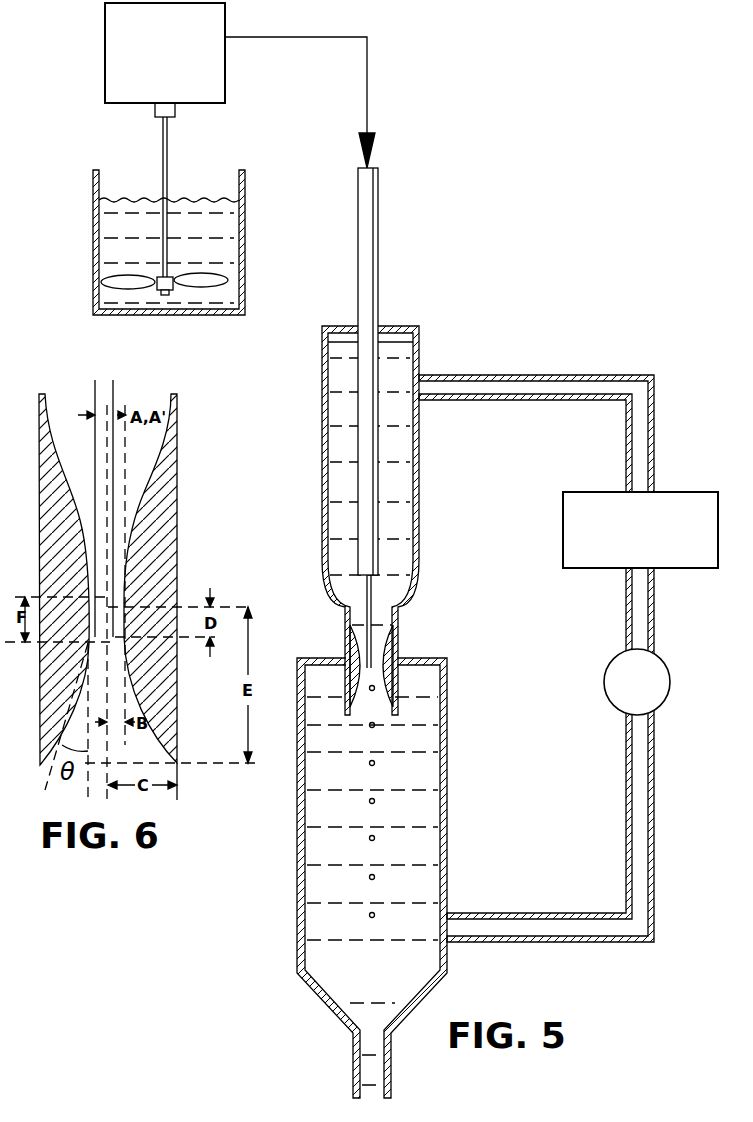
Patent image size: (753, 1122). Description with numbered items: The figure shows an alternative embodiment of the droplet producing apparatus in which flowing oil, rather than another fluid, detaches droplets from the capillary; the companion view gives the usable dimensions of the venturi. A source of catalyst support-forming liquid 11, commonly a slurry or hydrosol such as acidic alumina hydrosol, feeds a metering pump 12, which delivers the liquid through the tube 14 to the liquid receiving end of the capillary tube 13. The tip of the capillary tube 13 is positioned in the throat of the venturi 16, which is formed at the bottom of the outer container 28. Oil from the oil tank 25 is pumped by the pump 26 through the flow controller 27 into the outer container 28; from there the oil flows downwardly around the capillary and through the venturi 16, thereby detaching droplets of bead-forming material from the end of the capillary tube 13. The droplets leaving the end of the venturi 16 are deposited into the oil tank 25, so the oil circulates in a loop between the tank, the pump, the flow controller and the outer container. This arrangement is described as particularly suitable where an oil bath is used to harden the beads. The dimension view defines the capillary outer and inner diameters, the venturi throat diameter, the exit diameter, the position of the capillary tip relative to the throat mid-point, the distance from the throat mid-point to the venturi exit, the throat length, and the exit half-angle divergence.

The source of catalyst support-forming liquid 11 is at (245, 238).
The metering pump 12 is at (225, 20).
The capillary tube 13 is at (398, 618).
The tube 14 is at (378, 437).
The venturi 16 is at (350, 640).
The oil tank 25 is at (447, 722).
The pump 26 is at (668, 698).
The flow controller 27 is at (668, 492).
The outer container 28 is at (419, 500).